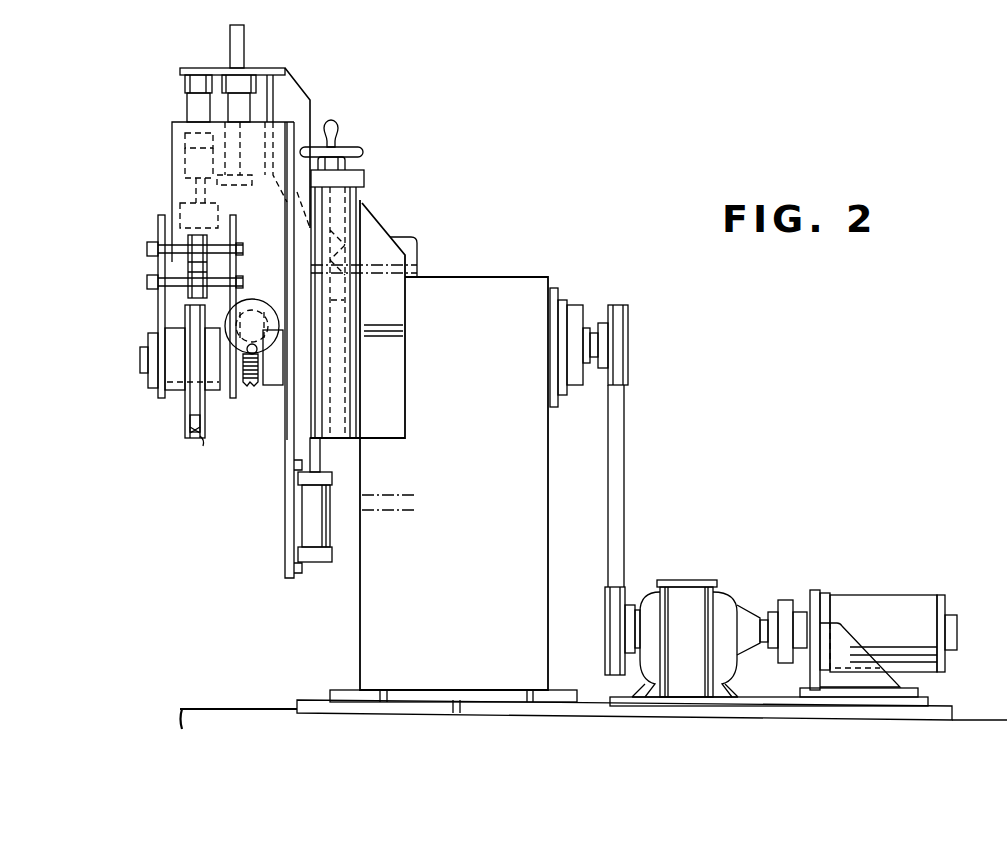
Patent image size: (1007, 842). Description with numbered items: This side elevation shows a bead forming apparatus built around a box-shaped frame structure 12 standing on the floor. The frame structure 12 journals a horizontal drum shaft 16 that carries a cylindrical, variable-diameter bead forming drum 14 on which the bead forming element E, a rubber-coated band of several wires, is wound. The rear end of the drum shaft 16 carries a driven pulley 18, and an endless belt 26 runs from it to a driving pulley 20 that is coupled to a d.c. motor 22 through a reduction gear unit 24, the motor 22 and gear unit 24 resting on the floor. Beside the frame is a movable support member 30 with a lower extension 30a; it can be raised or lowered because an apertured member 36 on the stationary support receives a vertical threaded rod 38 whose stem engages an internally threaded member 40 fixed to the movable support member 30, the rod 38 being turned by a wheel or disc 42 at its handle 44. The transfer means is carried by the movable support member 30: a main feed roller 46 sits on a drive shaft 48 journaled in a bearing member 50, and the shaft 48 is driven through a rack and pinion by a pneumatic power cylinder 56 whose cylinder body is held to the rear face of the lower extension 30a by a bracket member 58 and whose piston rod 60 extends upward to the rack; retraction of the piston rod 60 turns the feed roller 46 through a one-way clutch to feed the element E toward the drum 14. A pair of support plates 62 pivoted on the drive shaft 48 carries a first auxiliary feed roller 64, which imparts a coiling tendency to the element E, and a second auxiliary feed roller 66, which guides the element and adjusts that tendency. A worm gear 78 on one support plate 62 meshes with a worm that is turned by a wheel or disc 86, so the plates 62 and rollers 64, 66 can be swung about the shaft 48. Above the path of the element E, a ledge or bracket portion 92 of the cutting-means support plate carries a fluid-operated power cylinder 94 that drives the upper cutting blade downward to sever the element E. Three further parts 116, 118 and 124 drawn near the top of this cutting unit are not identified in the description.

The frame structure 12 is at (360, 632).
The bead forming drum 14 is at (205, 437).
The drum shaft 16 is at (595, 330).
The driven pulley 18 is at (628, 345).
The driving pulley 20 is at (605, 635).
The d.c. motor 22 is at (885, 598).
The reduction gear unit 24 is at (690, 580).
The endless belt 26 is at (626, 510).
The auxiliary movable support member 30 is at (406, 365).
The lower extension 30a is at (284, 560).
The apertured member 36 is at (366, 178).
The threaded rod 38 is at (363, 202).
The internally threaded member 40 is at (346, 240).
The wheel or disc 42 is at (362, 148).
The handle 44 is at (336, 125).
The main feed roller 46 is at (186, 408).
The drive shaft 48 is at (140, 357).
The bearing member 50 is at (275, 387).
The pneumatic power cylinder 56 is at (325, 562).
The bracket member 58 is at (294, 466).
The piston rod 60 is at (320, 452).
The support plate 62 is at (160, 215).
The first auxiliary feed roller 64 is at (190, 295).
The second auxiliary feed roller 66 is at (160, 265).
The worm gear 78 is at (252, 388).
The wheel or disc 86 is at (256, 300).
The ledge or bracket portion 92 is at (172, 122).
The fluid-operated power cylinder 94 is at (185, 157).
The cross bar 116 is at (203, 68).
The air cylinder 118 is at (186, 100).
The rod 124 is at (247, 34).
The bead forming element E is at (194, 438).